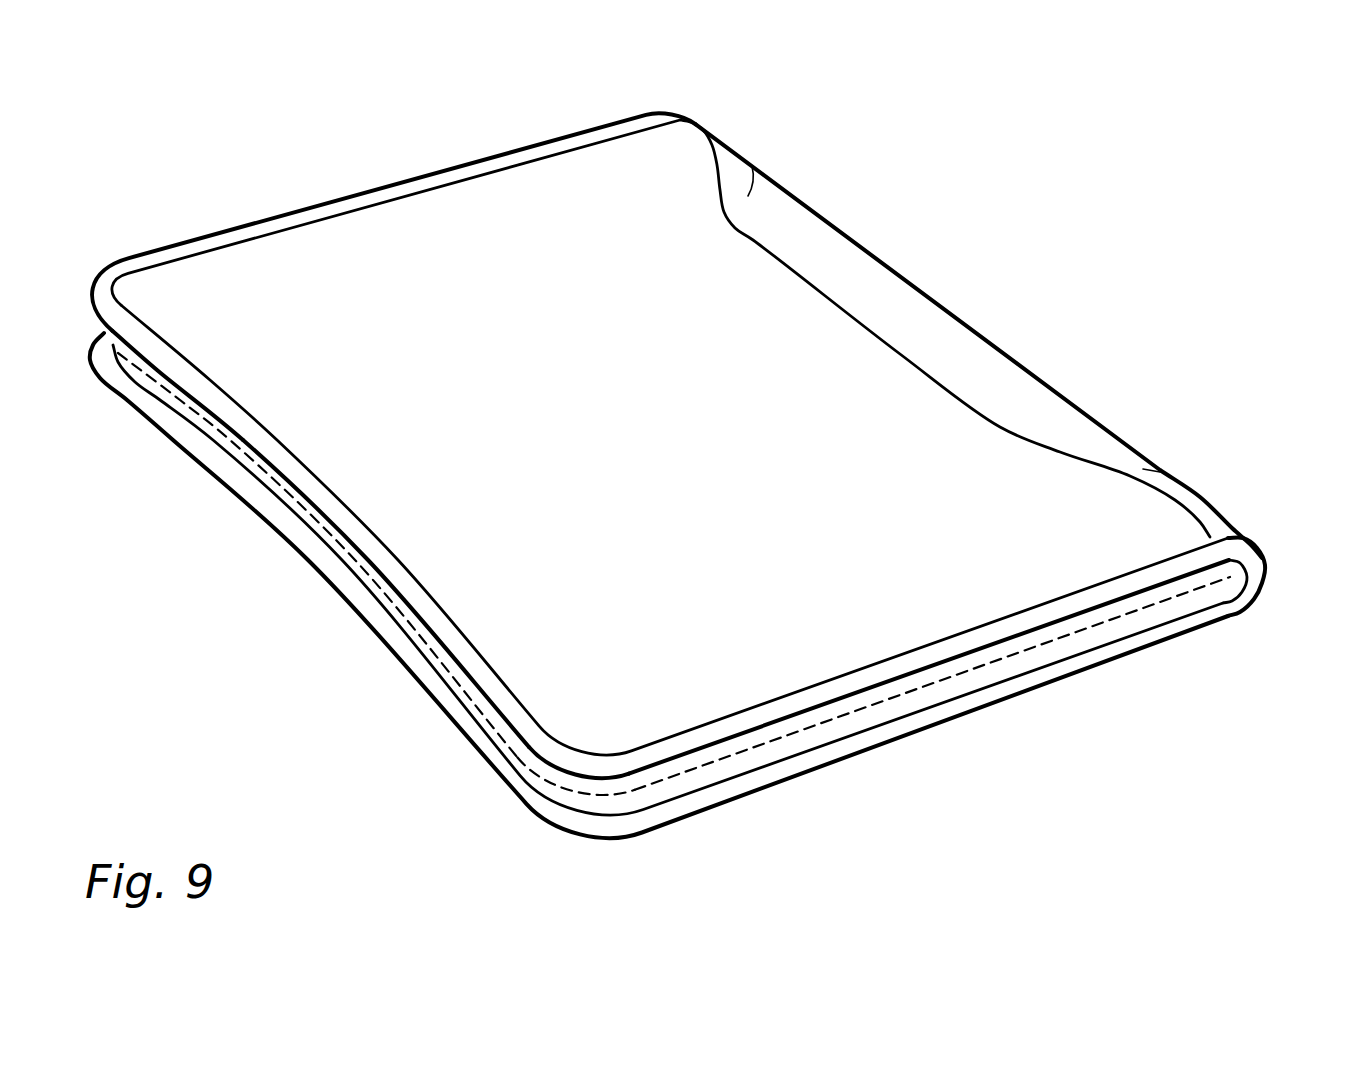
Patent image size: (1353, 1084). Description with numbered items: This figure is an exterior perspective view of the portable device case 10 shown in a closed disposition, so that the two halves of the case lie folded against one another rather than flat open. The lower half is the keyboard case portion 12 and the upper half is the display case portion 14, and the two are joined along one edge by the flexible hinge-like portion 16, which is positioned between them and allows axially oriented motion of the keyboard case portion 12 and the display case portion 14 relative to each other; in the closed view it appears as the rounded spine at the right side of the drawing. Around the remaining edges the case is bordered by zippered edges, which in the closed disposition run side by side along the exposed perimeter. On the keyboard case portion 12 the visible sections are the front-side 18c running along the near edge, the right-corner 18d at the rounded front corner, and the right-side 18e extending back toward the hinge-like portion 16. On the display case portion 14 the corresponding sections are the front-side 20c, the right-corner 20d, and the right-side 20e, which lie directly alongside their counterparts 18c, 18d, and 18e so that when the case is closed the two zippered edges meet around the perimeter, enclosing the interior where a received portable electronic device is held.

The portable device case 10 is at (1003, 141).
The keyboard case portion 12 is at (323, 628).
The display case portion 14 is at (433, 121).
The flexible hinge-like portion 16 is at (1268, 573).
The front-side of zippered edge 18c is at (277, 492).
The right-corner of zippered edge 18d is at (593, 808).
The right-side of zippered edge 18e is at (917, 699).
The front-side of zippered edge 20c is at (250, 453).
The right-corner of zippered edge 20d is at (617, 788).
The right-side of zippered edge 20e is at (1000, 653).